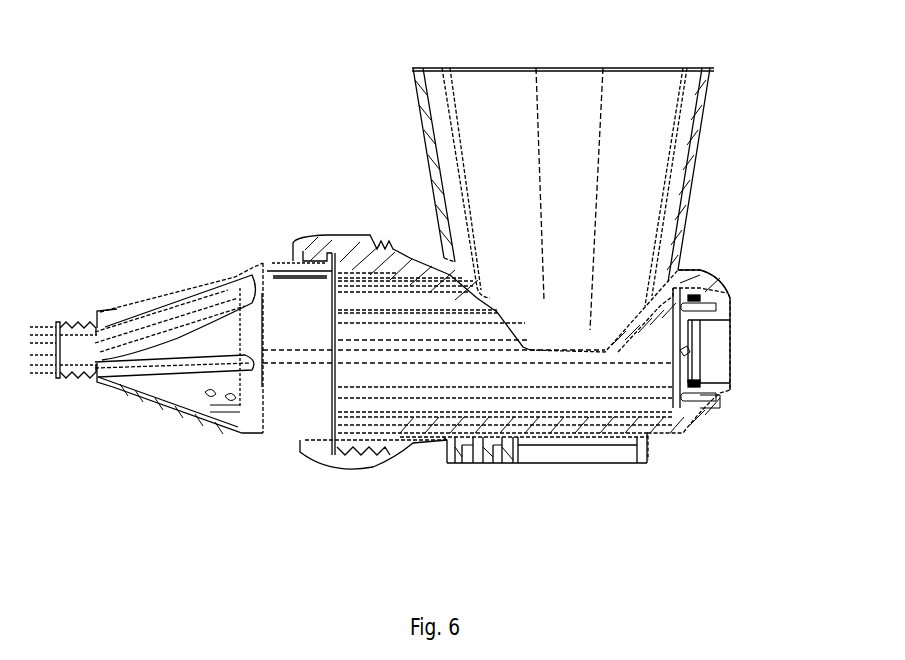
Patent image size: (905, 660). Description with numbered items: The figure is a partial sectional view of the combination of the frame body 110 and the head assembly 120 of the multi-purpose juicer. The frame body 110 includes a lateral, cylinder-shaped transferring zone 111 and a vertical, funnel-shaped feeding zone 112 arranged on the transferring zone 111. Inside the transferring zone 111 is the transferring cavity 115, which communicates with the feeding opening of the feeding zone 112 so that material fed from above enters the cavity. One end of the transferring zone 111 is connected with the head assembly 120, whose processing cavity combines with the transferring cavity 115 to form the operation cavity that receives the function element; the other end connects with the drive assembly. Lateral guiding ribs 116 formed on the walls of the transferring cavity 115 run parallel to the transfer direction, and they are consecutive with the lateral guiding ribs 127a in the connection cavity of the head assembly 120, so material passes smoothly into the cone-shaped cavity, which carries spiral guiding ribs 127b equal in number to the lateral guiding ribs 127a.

The frame body 110 is at (732, 184).
The transferring zone 111 is at (420, 456).
The feeding zone 112 is at (645, 128).
The transferring cavity 115 is at (465, 378).
The lateral guiding ribs 116 is at (378, 316).
The head assembly 120 is at (163, 428).
The lateral guiding ribs 127a is at (278, 311).
The spiral guiding ribs 127b is at (178, 336).